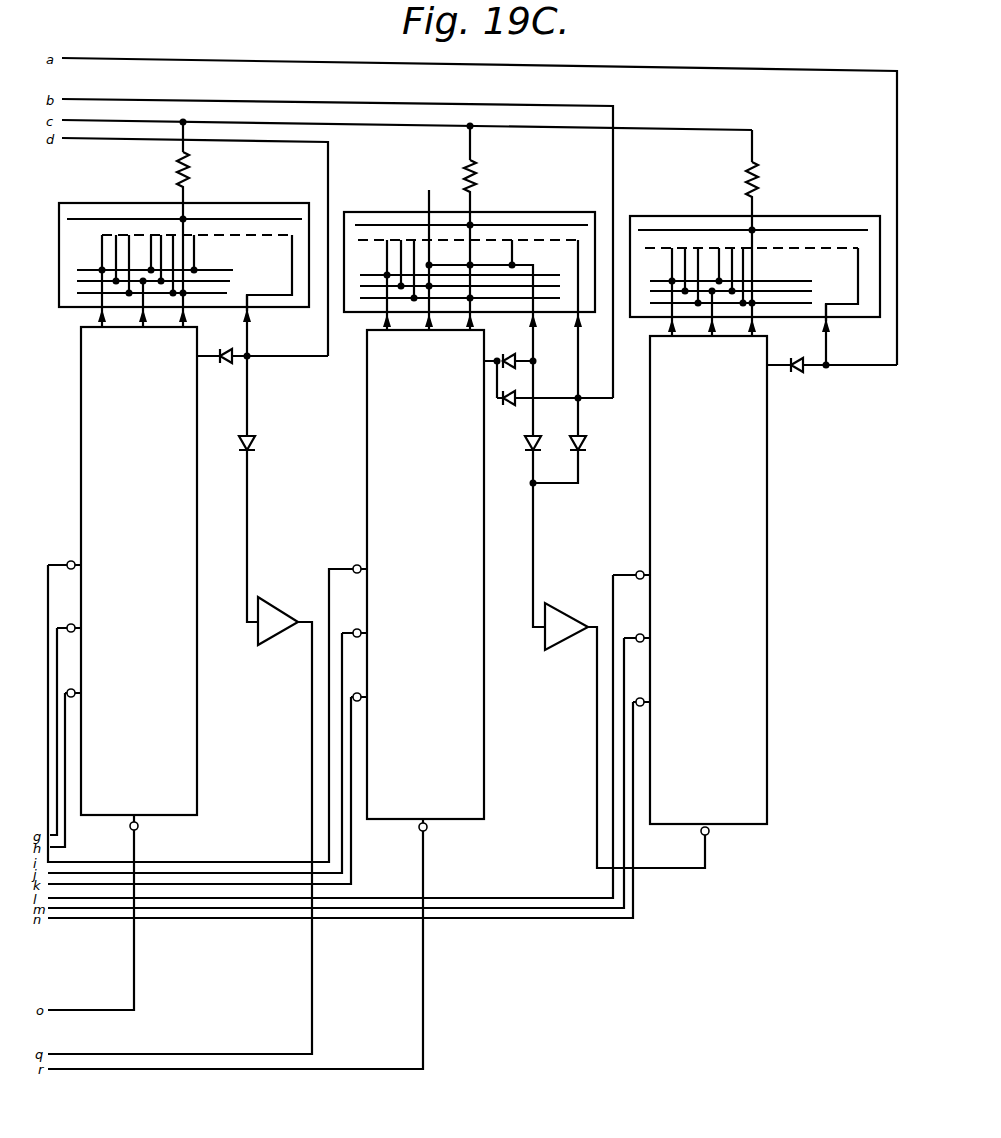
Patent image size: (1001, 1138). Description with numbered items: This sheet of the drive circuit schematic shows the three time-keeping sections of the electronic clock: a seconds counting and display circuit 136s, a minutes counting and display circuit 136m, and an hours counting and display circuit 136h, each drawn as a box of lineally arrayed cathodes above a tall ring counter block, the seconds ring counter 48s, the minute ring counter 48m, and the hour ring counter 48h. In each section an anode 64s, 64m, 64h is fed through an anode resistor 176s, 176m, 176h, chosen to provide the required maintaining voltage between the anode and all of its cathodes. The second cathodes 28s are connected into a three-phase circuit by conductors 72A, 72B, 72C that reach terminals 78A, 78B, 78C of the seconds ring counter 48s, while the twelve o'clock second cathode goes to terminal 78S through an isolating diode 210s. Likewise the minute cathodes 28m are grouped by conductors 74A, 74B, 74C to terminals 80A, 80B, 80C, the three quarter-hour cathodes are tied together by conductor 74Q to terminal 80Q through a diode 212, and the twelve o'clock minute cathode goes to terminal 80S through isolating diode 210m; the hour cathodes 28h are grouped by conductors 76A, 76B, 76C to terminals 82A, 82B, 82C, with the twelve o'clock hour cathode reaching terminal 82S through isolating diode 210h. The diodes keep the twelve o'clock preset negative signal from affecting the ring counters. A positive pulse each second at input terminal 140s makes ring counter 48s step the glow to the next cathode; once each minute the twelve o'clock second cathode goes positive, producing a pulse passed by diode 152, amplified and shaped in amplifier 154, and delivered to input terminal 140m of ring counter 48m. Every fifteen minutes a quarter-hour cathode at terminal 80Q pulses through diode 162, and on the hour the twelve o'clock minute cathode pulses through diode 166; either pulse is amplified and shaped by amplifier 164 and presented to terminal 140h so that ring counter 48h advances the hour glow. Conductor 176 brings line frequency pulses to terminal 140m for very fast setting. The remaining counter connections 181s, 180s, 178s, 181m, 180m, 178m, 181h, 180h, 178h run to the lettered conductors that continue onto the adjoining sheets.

The seconds counting and display circuit 136s is at (59, 204).
The minutes counting and display circuit 136m is at (345, 212).
The hours counting and display circuit 136h is at (631, 216).
The anode 64s is at (96, 219).
The anode 64m is at (375, 225).
The anode 64h is at (658, 230).
The anode resistor 176s is at (188, 170).
The anode resistor 176m is at (476, 168).
The anode resistor 176h is at (758, 178).
The conductor 176 is at (348, 1072).
The second cathodes 28s is at (73, 248).
The minute cathodes 28m is at (602, 155).
The hour cathodes 28h is at (755, 266).
The conductor 72A is at (220, 261).
The conductor 72B is at (236, 281).
The conductor 72C is at (230, 293).
The conductor 74A is at (372, 260).
The conductor 74B is at (330, 350).
The conductor 74C is at (345, 330).
The conductor 74Q is at (493, 322).
The conductor 76A is at (655, 275).
The conductor 76B is at (608, 318).
The conductor 76C is at (605, 360).
The terminal 78A is at (97, 315).
The terminal 78B is at (143, 315).
The terminal 78C is at (182, 317).
The terminal 78S is at (248, 334).
The terminal 80A is at (385, 318).
The terminal 80B is at (428, 318).
The terminal 80C is at (468, 320).
The terminal 80Q is at (533, 345).
The terminal 80S is at (534, 332).
The terminal 82A is at (668, 332).
The terminal 82B is at (708, 325).
The terminal 82C is at (748, 325).
The terminal 82S is at (828, 343).
The isolating diode 210s is at (222, 368).
The isolating diode 210m is at (510, 407).
The isolating diode 210h is at (798, 373).
The diode 212 is at (520, 366).
The diode 152 is at (255, 444).
The diode 162 is at (541, 452).
The diode 166 is at (584, 447).
The amplifier 154 is at (288, 637).
The amplifier 164 is at (564, 640).
The seconds ring counter 48s is at (103, 470).
The minute ring counter 48m is at (368, 490).
The hour ring counter 48h is at (652, 536).
The counter input terminal 181s is at (71, 561).
The counter input terminal 180s is at (71, 632).
The counter input terminal 178s is at (71, 697).
The counter input terminal 181m is at (357, 566).
The counter input terminal 180m is at (357, 637).
The counter input terminal 178m is at (357, 701).
The counter input terminal 181h is at (640, 575).
The counter input terminal 180h is at (640, 642).
The counter input terminal 178h is at (640, 706).
The input terminal 140s is at (138, 830).
The input terminal 140m is at (427, 833).
The input terminal 140h is at (710, 840).